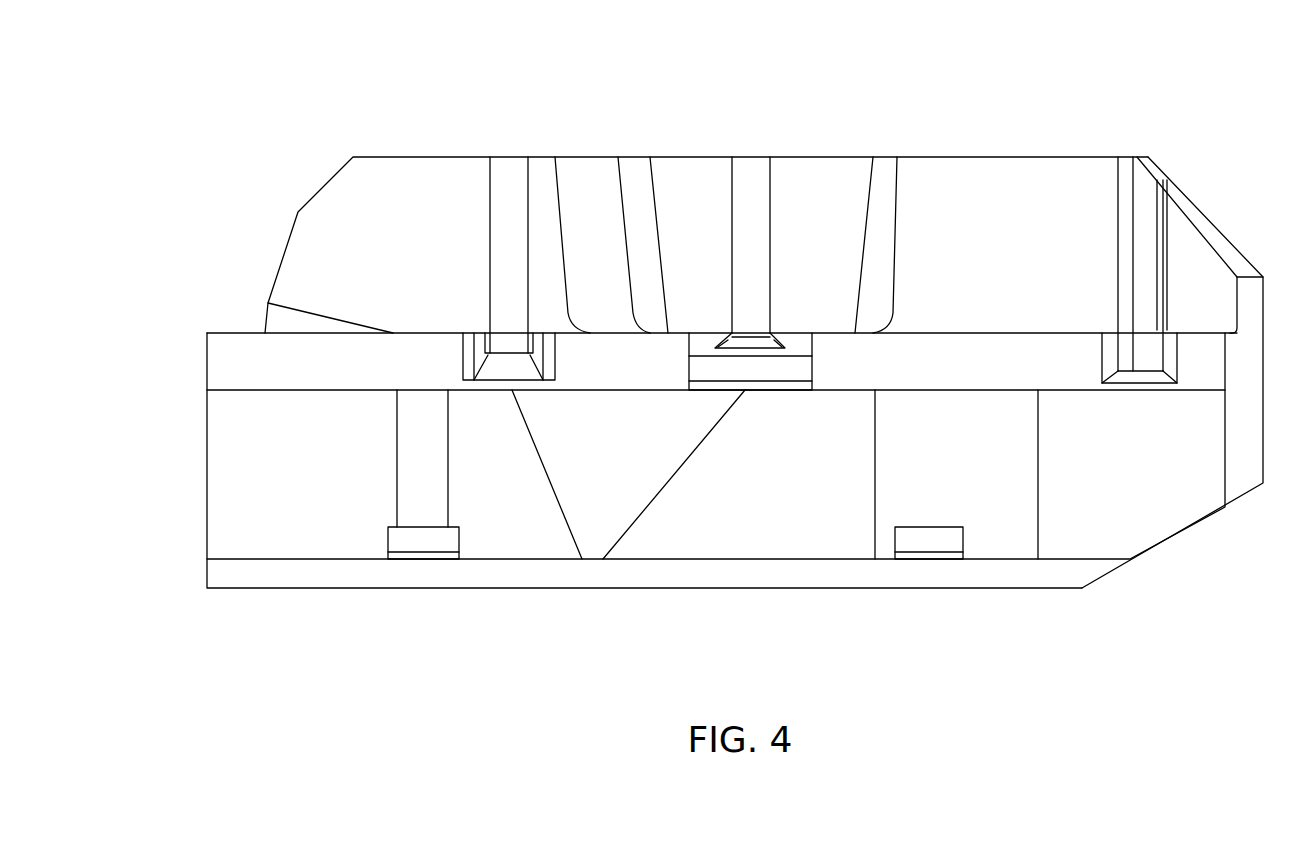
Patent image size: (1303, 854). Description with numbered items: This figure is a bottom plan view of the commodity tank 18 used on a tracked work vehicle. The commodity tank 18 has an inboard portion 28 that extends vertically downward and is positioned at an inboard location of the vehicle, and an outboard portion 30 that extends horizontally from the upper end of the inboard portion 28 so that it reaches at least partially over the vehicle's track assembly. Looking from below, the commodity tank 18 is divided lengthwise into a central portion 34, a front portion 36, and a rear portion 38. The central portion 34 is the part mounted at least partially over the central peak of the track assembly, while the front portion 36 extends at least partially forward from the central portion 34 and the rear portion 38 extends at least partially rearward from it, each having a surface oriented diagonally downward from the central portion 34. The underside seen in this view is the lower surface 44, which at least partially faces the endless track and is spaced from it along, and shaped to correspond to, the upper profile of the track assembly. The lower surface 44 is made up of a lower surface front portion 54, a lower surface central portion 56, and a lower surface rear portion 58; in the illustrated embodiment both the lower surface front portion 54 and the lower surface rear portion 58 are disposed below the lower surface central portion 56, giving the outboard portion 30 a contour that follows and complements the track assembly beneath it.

The commodity tank 18 is at (1178, 146).
The inboard portion 28 is at (193, 472).
The outboard portion 30 is at (330, 153).
The central portion 34 is at (754, 150).
The front portion 36 is at (445, 150).
The rear portion 38 is at (1081, 145).
The lower surface 44 is at (945, 210).
The lower surface front portion 54 is at (571, 222).
The lower surface central portion 56 is at (821, 200).
The lower surface rear portion 58 is at (1012, 225).